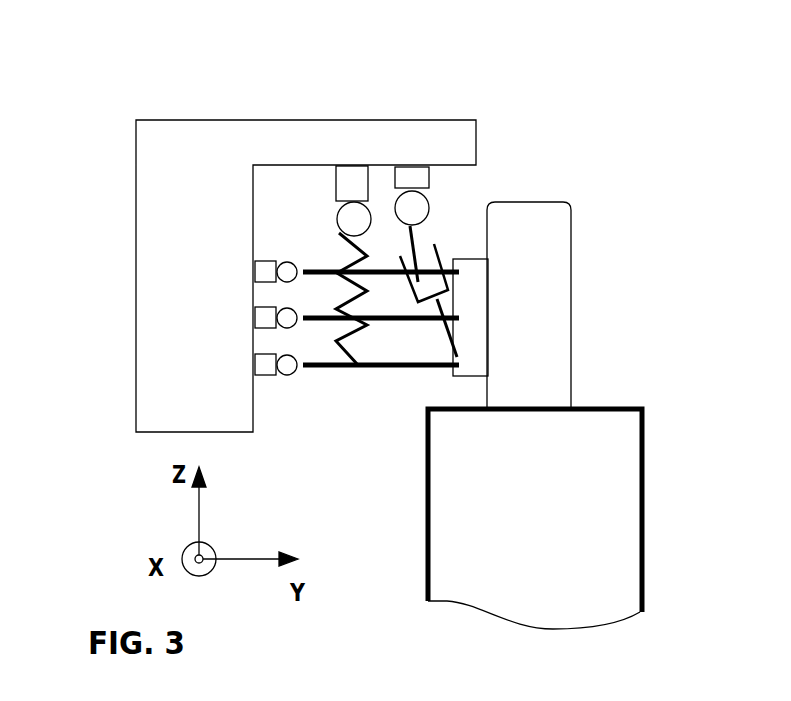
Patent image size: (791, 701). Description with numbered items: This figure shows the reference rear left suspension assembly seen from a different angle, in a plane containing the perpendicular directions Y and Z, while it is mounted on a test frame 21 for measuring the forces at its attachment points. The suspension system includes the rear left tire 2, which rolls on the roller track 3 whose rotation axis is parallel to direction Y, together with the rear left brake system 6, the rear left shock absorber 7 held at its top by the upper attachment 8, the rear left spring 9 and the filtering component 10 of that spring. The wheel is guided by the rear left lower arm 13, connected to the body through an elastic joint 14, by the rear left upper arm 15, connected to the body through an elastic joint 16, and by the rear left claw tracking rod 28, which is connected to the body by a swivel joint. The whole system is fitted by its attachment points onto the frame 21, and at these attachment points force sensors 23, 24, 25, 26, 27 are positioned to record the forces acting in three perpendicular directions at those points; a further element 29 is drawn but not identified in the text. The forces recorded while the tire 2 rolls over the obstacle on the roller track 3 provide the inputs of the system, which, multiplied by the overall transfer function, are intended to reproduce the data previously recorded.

The rear left tire 2 is at (565, 292).
The roller track 3 is at (570, 578).
The rear left brake system 6 is at (477, 308).
The rear left shock absorber 7 is at (423, 249).
The upper attachment of the rear left shock absorber 8 is at (412, 213).
The rear left spring 9 is at (347, 258).
The filtering component of the rear left spring 10 is at (357, 225).
The rear left lower arm 13 is at (308, 335).
The elastic joint connecting the rear left lower arm to the body 14 is at (288, 378).
The rear left upper arm 15 is at (335, 272).
The elastic joint connecting the rear left upper arm to the body 16 is at (164, 230).
The frame 21 is at (196, 143).
The force sensor 23 is at (406, 180).
The force sensor 24 is at (358, 180).
The force sensor 25 is at (263, 365).
The force sensor 26 is at (262, 272).
The force sensor 27 is at (263, 322).
The rear left claw tracking rod 28 is at (393, 323).
The lower plate 29 is at (338, 370).